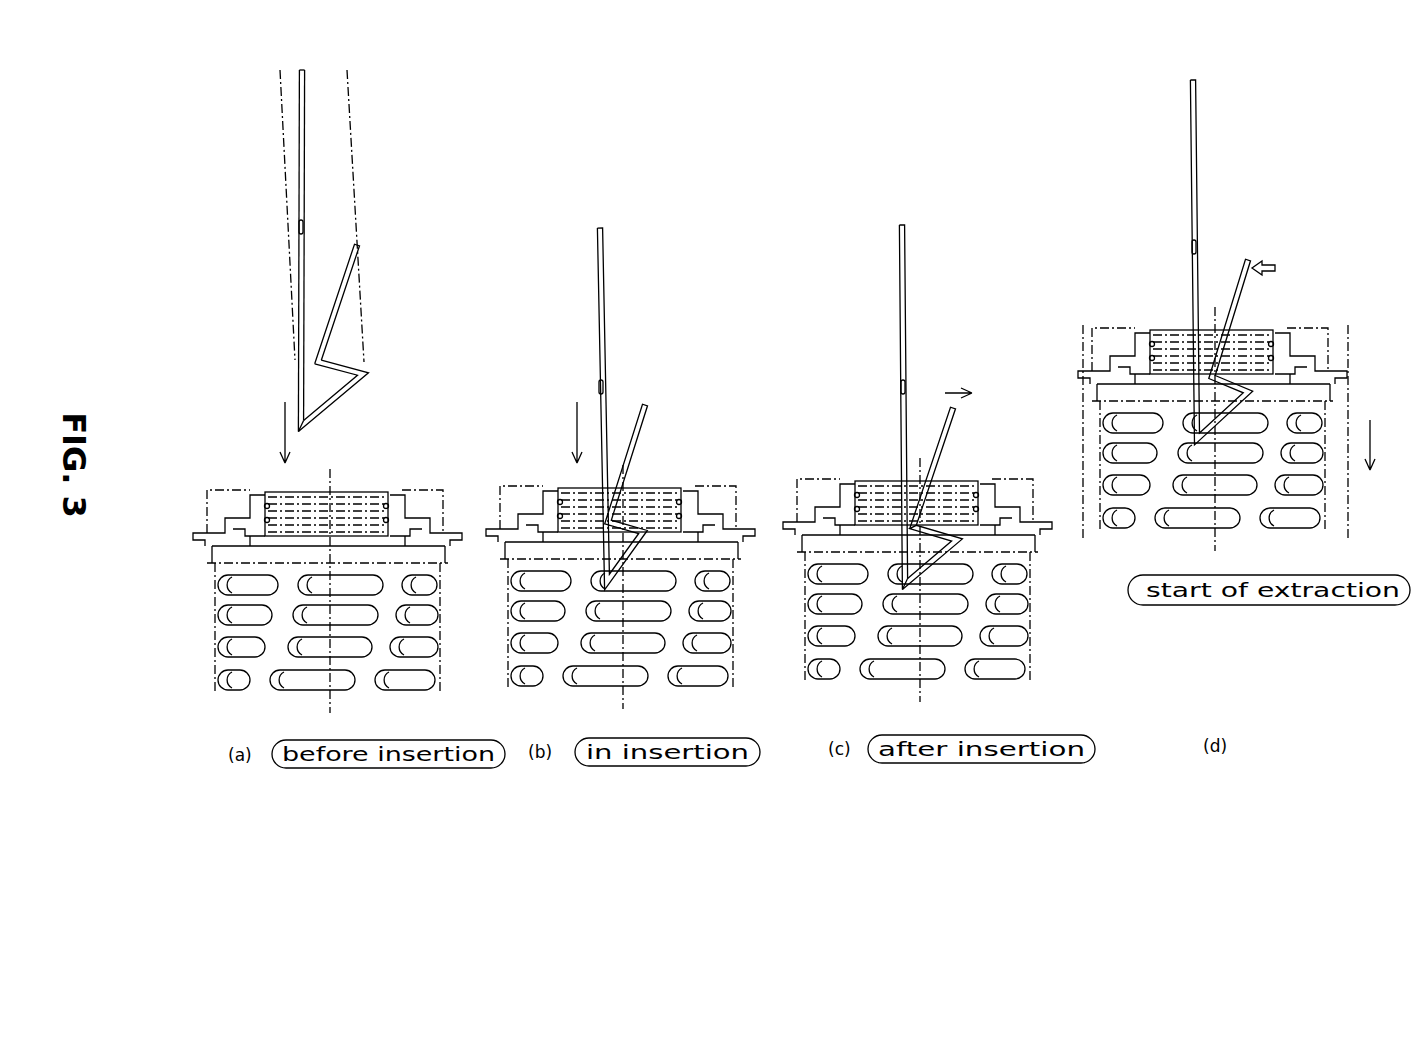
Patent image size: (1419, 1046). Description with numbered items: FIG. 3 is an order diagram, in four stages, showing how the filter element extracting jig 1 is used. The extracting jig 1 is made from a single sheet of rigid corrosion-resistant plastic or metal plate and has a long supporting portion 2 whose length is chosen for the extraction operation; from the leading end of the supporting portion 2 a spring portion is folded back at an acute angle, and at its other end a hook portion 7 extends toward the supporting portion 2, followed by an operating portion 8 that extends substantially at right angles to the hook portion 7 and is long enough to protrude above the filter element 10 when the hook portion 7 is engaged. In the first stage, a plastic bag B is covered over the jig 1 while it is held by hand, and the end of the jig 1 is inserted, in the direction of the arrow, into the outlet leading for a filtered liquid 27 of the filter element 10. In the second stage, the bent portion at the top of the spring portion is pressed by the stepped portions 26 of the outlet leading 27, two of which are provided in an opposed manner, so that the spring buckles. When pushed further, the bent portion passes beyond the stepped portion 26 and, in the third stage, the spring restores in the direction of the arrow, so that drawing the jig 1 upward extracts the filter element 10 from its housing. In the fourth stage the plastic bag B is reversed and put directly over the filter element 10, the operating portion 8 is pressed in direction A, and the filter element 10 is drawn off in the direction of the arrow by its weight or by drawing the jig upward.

The filter element extracting jig 1 is at (338, 266).
The supporting portion 2 is at (305, 153).
The hook portion 7 is at (348, 374).
The operating portion 8 is at (352, 272).
The filter element 10 is at (207, 601).
The stepped portions 26 is at (963, 537).
The outlet leading for a filtered liquid 27 is at (274, 494).
The direction of pressing the operating portion A is at (1272, 271).
The plastic bag B is at (364, 195).